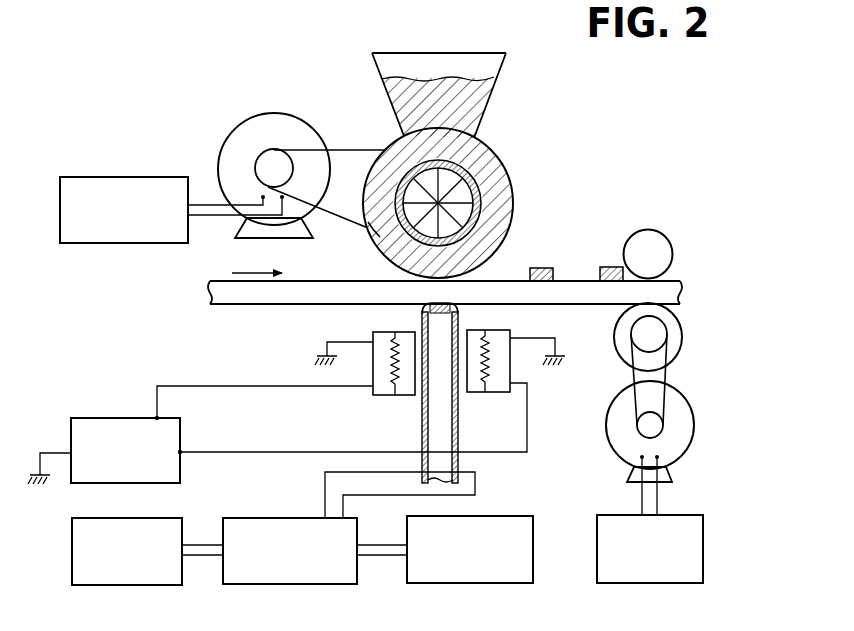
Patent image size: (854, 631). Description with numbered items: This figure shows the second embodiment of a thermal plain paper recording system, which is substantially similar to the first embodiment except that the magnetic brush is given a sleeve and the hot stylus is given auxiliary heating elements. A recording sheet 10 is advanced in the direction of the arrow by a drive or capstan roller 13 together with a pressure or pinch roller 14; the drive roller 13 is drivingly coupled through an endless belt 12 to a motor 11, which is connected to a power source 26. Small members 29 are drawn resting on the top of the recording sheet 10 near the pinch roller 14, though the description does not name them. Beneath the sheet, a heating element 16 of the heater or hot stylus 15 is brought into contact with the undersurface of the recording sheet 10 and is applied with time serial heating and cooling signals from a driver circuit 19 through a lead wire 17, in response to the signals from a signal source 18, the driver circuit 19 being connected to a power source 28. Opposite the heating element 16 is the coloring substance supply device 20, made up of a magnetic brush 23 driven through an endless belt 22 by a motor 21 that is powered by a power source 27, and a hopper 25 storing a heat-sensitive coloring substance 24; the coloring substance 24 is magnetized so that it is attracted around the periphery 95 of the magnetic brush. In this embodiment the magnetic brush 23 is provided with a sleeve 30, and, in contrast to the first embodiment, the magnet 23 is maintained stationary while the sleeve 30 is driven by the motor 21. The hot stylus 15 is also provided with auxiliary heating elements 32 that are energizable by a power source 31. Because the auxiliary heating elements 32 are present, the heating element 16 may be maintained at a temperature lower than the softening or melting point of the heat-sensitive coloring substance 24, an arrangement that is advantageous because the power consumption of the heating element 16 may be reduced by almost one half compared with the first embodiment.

The recording sheet 10 is at (270, 308).
The motor 11 is at (690, 423).
The endless belt 12 is at (667, 373).
The drive or capstan roller 13 is at (680, 328).
The pressure or pinch roller 14 is at (650, 228).
The heater or thermal print head or hot stylus 15 is at (458, 417).
The heating element 16 is at (440, 393).
The lead wire 17 is at (423, 415).
The signal source 18 is at (510, 516).
The driver circuit 19 is at (297, 518).
The coloring substance supply device 20 is at (477, 201).
The motor 21 is at (222, 165).
The endless belt 22 is at (348, 150).
The magnetic brush 23 is at (473, 213).
The heat-sensitive coloring substance 24 is at (487, 100).
The hopper 25 is at (503, 62).
The power source 26 is at (703, 545).
The power source 27 is at (113, 243).
The power source 28 is at (183, 525).
The spacer 29 is at (544, 268).
The sleeve 30 is at (483, 143).
The power source 31 is at (115, 417).
The auxiliary heating elements 32 is at (380, 332).
The magnetic brush periphery 95 is at (380, 237).